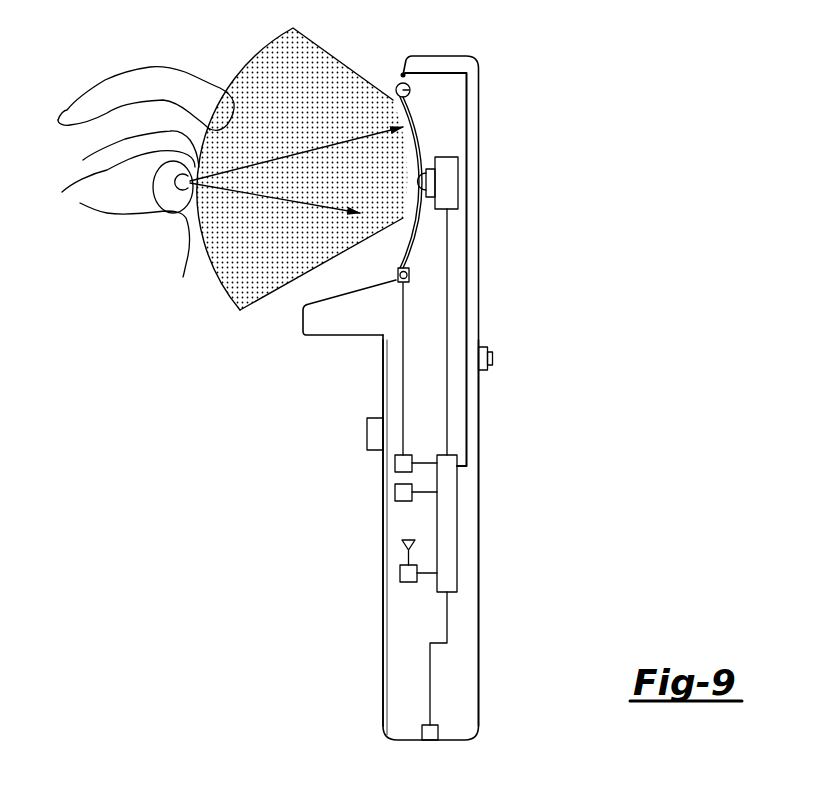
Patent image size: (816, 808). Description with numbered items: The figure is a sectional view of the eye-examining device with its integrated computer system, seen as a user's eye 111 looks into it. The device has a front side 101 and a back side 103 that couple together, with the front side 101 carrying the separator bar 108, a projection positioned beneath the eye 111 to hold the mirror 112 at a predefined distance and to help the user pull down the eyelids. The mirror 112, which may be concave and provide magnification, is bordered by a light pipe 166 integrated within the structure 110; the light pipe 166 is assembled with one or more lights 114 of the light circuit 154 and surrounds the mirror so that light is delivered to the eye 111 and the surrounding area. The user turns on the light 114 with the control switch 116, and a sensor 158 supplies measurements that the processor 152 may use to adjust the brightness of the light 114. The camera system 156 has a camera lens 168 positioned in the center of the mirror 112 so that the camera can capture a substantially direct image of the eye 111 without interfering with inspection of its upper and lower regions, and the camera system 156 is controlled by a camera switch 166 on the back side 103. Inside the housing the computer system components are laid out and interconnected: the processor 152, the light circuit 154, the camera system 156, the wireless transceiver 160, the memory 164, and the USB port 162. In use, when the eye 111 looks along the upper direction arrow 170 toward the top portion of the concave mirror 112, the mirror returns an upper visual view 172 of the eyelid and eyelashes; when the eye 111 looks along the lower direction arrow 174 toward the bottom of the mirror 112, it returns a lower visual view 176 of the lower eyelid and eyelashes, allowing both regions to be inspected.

The front side 101 is at (381, 652).
The back side 103 is at (481, 652).
The separator bar 108 is at (320, 318).
The structure 110 is at (480, 112).
The eye 111 is at (160, 183).
The mirror 112 is at (397, 95).
The light 114 is at (398, 280).
The control switch 116 is at (367, 433).
The processor 152 is at (447, 530).
The light circuit 154 is at (395, 463).
The camera system 156 is at (459, 183).
The sensor 158 is at (403, 75).
The wireless transceiver 160 is at (400, 573).
The USB port 162 is at (440, 730).
The memory 164 is at (395, 492).
The light pipe 166 is at (411, 90).
The camera lens 168 is at (418, 178).
The upper direction arrow 170 is at (295, 154).
The upper visual view 172 is at (273, 58).
The lower direction arrow 174 is at (300, 202).
The lower visual view 176 is at (317, 252).